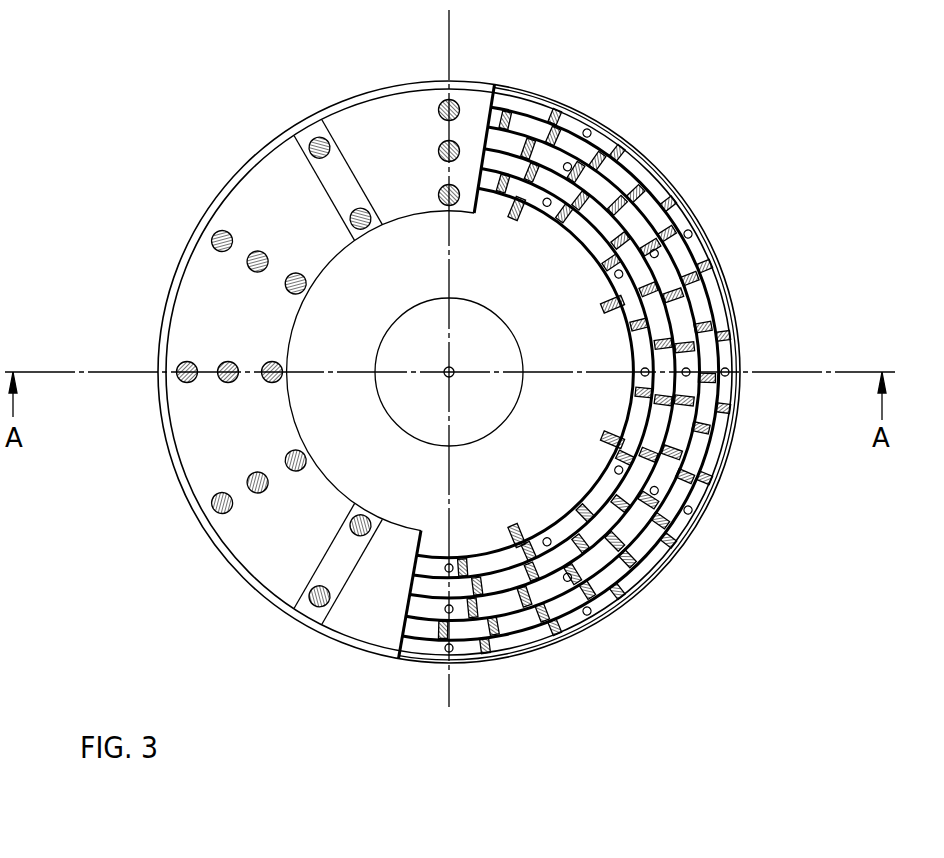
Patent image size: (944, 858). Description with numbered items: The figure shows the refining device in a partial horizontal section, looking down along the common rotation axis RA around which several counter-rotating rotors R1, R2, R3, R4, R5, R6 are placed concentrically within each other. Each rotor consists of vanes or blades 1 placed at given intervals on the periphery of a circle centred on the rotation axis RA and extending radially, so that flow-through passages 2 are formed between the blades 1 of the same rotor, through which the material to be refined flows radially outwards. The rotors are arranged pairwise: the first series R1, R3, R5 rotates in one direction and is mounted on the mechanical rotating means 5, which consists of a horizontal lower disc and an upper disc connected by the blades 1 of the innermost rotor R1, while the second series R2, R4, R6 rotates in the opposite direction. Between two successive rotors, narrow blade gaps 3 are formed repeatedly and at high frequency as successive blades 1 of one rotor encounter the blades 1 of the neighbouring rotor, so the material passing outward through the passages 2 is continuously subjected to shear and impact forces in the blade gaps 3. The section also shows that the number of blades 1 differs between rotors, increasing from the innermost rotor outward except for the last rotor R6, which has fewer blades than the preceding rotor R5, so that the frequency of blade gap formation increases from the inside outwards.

The vanes or blades 1 is at (563, 103).
The flow-through passages 2 is at (720, 463).
The blade gaps 3 is at (730, 447).
The mechanical rotating means 5 is at (370, 138).
The first rotor R1 is at (486, 190).
The second rotor R2 is at (590, 110).
The third rotor R3 is at (593, 137).
The fourth rotor R4 is at (635, 155).
The fifth rotor R5 is at (625, 177).
The sixth rotor R6 is at (670, 185).
The rotation axis RA is at (449, 372).